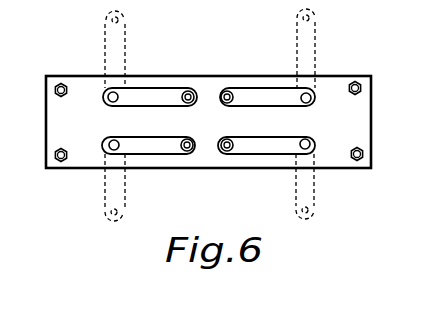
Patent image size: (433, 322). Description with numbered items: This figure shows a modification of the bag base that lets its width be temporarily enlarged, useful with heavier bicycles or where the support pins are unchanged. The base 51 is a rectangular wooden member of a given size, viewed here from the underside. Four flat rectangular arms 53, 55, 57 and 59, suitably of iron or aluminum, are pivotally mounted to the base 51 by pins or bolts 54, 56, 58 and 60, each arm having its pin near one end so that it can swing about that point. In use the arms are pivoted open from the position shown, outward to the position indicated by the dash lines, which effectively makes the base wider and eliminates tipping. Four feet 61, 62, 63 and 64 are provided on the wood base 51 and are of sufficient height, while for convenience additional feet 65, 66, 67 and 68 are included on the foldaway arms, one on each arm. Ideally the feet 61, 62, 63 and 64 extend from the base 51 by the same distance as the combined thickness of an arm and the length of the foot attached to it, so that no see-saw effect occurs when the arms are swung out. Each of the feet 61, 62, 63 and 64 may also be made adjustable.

The base 51 is at (372, 121).
The arm 53 is at (158, 93).
The pin or bolt 54 is at (109, 101).
The arm 55 is at (271, 88).
The pin or bolt 56 is at (310, 102).
The arm 57 is at (147, 154).
The pin or bolt 58 is at (118, 142).
The arm 59 is at (273, 154).
The pin or bolt 60 is at (311, 146).
The foot 61 is at (62, 84).
The foot 62 is at (355, 82).
The foot 63 is at (356, 161).
The foot 64 is at (61, 162).
The foot 65 is at (188, 90).
The foot 66 is at (227, 90).
The foot 67 is at (185, 152).
The foot 68 is at (225, 152).